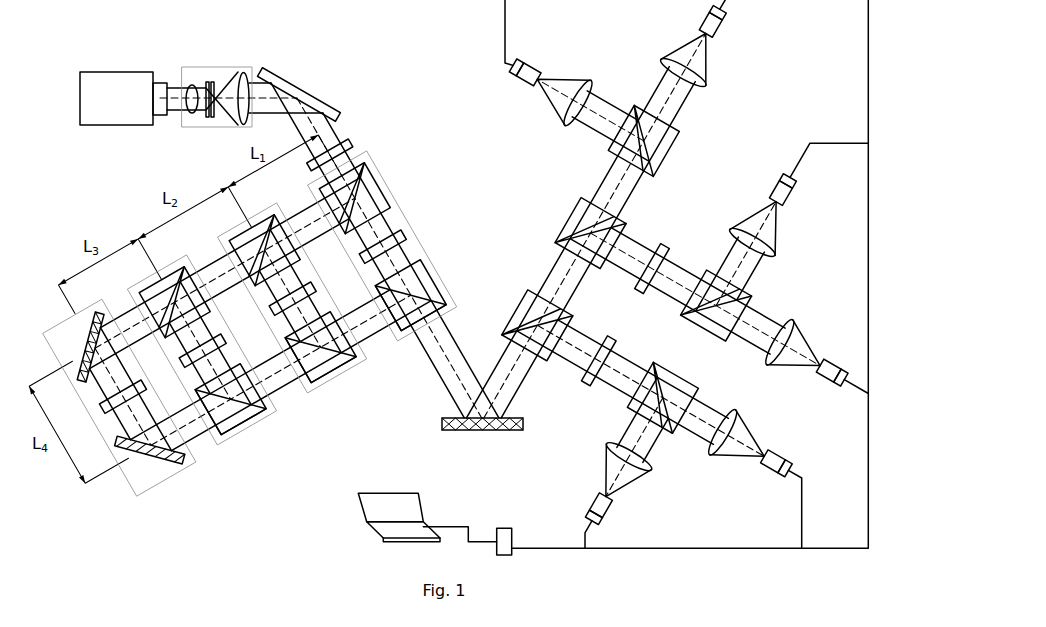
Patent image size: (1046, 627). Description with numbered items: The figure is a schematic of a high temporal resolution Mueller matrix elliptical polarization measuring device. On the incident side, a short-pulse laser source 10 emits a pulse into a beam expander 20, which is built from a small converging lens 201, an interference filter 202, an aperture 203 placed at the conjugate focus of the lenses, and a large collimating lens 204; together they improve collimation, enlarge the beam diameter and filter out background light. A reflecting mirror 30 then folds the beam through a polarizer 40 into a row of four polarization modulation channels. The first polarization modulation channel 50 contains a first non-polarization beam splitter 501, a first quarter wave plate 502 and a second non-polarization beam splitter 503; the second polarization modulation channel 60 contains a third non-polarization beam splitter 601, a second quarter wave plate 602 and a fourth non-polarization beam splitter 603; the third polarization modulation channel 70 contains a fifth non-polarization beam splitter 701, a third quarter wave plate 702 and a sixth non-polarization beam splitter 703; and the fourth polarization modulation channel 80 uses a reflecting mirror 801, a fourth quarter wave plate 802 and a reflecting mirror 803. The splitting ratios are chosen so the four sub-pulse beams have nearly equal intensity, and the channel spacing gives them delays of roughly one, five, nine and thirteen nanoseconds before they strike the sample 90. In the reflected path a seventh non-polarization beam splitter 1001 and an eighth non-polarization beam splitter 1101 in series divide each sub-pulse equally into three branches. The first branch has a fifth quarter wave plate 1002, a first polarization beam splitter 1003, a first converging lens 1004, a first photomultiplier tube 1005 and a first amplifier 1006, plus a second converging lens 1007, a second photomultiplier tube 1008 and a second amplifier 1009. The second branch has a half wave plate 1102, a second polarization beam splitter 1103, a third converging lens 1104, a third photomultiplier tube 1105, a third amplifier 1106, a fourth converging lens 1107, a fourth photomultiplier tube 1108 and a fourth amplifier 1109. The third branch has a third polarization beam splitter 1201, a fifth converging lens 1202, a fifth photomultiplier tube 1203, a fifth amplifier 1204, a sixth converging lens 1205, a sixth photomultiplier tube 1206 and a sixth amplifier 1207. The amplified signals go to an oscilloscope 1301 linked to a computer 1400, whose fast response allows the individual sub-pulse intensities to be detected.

The short-pulse laser source 10 is at (110, 82).
The beam expander 20 is at (186, 118).
The small converging lens 201 is at (190, 86).
The interference filter 202 is at (207, 82).
The aperture 203 is at (213, 82).
The large collimating lens 204 is at (246, 75).
The reflecting mirror 30 is at (302, 75).
The polarizer 40 is at (350, 140).
The first polarization modulation channel 50 is at (375, 170).
The first non-polarization beam splitter 501 is at (372, 185).
The first ¼ wave plate 502 is at (400, 238).
The second non-polarization beam splitter 503 is at (430, 268).
The second polarization modulation channel 60 is at (224, 238).
The third non-polarization beam splitter 601 is at (254, 266).
The second ¼ wave plate 602 is at (275, 318).
The fourth non-polarization beam splitter 603 is at (312, 376).
The third polarization modulation channel 70 is at (134, 287).
The fifth non-polarization beam splitter 701 is at (160, 335).
The third ¼ wave plate 702 is at (178, 360).
The sixth non-polarization beam splitter 703 is at (236, 420).
The fourth polarization modulation channel 80 is at (63, 332).
The reflecting mirror 801 is at (75, 385).
The fourth ¼ wave plate 802 is at (97, 414).
The reflecting mirror 803 is at (123, 457).
The sample to be tested 90 is at (441, 422).
The seventh non-polarization beam splitter 1001 is at (513, 325).
The fifth ¼ wave plate 1002 is at (588, 376).
The first polarization beam splitter 1003 is at (636, 398).
The first converging lens 1004 is at (647, 470).
The first photomultiplier tube 1005 is at (612, 508).
The first amplifier 1006 is at (591, 504).
The second converging lens 1007 is at (712, 452).
The second photomultiplier tube 1008 is at (762, 462).
The second amplifier 1009 is at (782, 478).
The eighth non-polarization beam splitter 1101 is at (578, 208).
The ½ wave plate 1102 is at (638, 292).
The second polarization beam splitter 1103 is at (695, 320).
The third converging lens 1104 is at (766, 355).
The third photomultiplier tube 1105 is at (812, 372).
The third amplifier 1106 is at (840, 382).
The fourth converging lens 1107 is at (772, 262).
The fourth photomultiplier tube 1108 is at (792, 215).
The fourth amplifier 1109 is at (795, 186).
The third polarization beam splitter 1201 is at (662, 158).
The fifth converging lens 1202 is at (560, 120).
The fifth photomultiplier tube 1203 is at (520, 86).
The fifth amplifier 1204 is at (506, 68).
The sixth converging lens 1205 is at (706, 88).
The sixth photomultiplier tube 1206 is at (722, 36).
The sixth amplifier 1207 is at (728, 8).
The oscilloscope 1301 is at (505, 543).
The computer 1400 is at (410, 505).